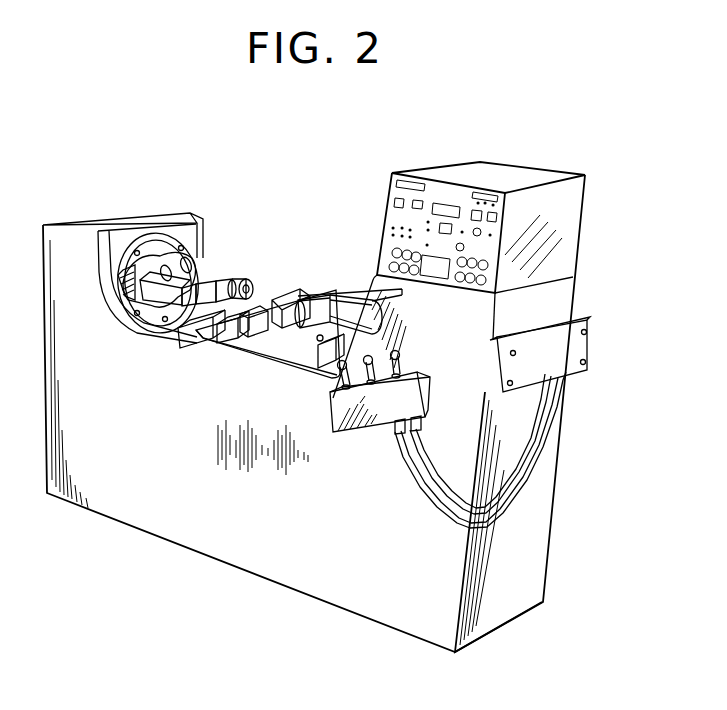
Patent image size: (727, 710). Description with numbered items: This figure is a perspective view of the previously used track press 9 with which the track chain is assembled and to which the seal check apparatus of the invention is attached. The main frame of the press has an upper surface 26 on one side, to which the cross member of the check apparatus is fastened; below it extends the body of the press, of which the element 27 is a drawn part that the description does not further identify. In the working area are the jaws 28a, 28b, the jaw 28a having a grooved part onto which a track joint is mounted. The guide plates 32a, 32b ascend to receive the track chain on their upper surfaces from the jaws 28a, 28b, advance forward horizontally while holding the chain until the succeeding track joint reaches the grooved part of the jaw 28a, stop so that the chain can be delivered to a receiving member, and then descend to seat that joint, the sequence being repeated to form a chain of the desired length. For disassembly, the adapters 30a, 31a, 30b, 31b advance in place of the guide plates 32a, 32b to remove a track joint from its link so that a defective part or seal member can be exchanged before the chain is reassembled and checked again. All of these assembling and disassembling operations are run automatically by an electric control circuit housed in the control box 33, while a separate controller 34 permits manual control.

The track press 9 is at (288, 218).
The upper surface of main frame 26 is at (112, 226).
The base 27 is at (113, 505).
The jaw 28a is at (284, 292).
The jaw 28b is at (223, 353).
The adapter 30a is at (246, 280).
The adapter 30b is at (338, 298).
The adapter 31a is at (193, 312).
The adapter 31b is at (312, 356).
The guide plate 32a is at (230, 334).
The guide plate 32b is at (276, 356).
The control box 33 is at (568, 218).
The controller 34 is at (407, 403).